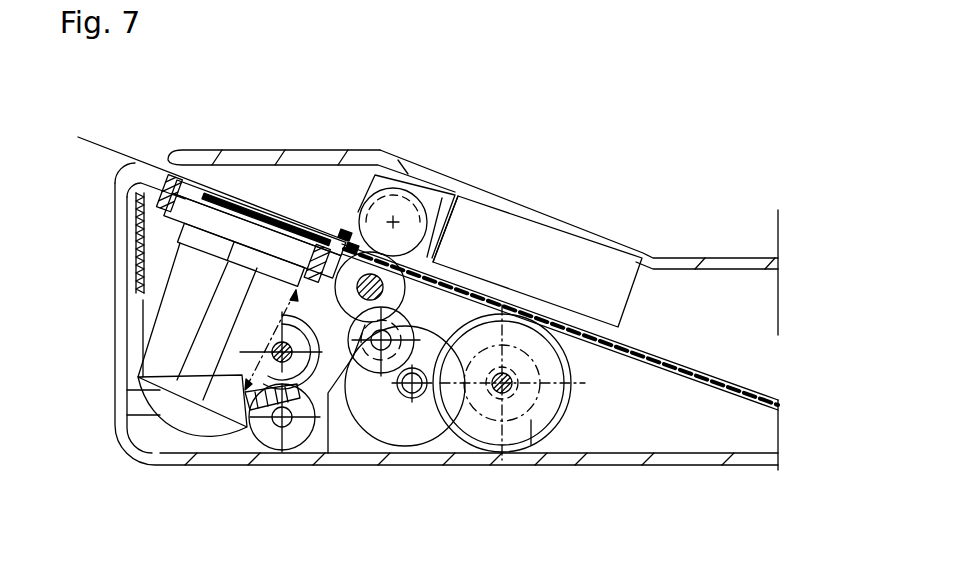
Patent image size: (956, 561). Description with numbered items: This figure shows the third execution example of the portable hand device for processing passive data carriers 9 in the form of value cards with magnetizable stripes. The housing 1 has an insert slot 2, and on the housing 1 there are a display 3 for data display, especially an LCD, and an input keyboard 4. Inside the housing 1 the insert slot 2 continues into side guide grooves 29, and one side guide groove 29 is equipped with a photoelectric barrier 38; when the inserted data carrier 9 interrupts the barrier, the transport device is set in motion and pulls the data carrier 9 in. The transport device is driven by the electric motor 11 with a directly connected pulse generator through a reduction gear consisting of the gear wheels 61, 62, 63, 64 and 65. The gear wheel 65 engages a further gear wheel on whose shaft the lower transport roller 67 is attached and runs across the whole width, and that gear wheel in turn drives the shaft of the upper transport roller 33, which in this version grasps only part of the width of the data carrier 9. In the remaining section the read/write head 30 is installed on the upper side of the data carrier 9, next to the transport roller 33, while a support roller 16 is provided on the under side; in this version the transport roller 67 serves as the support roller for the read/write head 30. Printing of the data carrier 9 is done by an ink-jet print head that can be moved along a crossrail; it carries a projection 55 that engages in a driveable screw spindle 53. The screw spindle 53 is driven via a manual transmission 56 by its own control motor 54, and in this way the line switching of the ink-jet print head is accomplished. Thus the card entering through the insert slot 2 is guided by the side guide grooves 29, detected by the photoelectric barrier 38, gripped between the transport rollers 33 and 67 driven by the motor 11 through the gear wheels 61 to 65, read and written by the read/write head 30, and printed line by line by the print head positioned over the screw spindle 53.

The housing 1 is at (677, 437).
The insert slot 2 is at (150, 156).
The display 3 is at (563, 243).
The input keyboard 4 is at (724, 250).
The passive data carrier 9 is at (130, 154).
The electric motor 11 is at (531, 445).
The support roller 16 is at (468, 218).
The side guide grooves 29 is at (752, 392).
The read/write head 30 is at (378, 173).
The upper transport roller 33 is at (405, 206).
The photoelectric barrier 38 is at (345, 232).
The screw spindle 53 is at (272, 352).
The control motor 54 is at (137, 431).
The projection 55 is at (275, 304).
The manual transmission 56 is at (262, 430).
The gear wheel 61 is at (499, 395).
The gear wheel 62 is at (443, 432).
The gear wheel 63 is at (411, 400).
The gear wheel 64 is at (378, 352).
The gear wheel 65 is at (328, 453).
The lower transport roller 67 is at (132, 234).